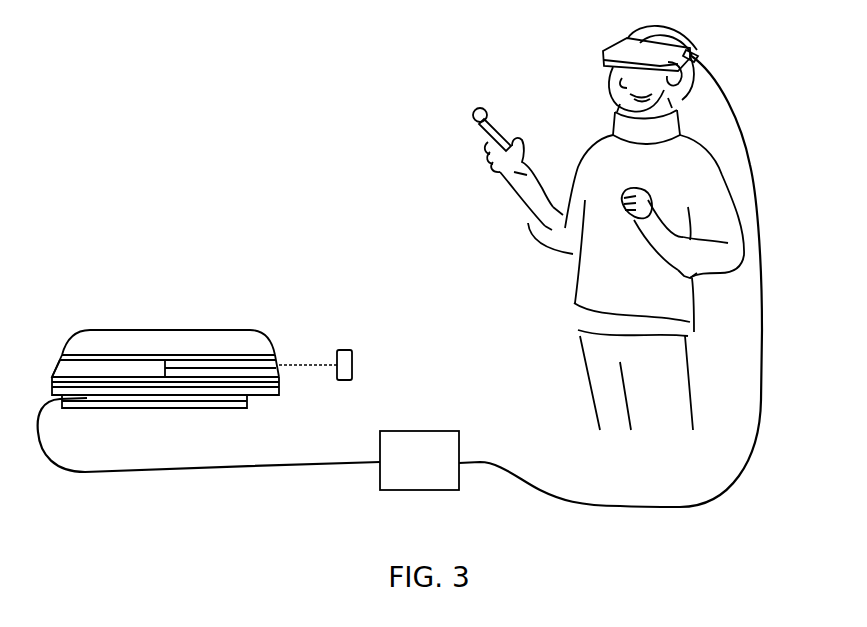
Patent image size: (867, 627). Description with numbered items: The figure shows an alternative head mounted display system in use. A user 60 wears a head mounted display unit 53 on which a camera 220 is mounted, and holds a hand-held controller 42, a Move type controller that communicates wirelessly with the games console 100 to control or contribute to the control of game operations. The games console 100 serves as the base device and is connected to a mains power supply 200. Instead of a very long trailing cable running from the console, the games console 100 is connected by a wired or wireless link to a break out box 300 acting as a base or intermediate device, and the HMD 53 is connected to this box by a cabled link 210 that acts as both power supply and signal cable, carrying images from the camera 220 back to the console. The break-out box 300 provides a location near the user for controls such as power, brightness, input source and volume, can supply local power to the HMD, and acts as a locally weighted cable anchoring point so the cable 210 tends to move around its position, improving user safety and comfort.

The games console 100 is at (175, 324).
The mains power supply 200 is at (346, 349).
The break out box 300 is at (418, 431).
The cable 210 is at (586, 496).
The user 60 is at (578, 147).
The hand-held controller 42 is at (497, 123).
The camera 220 is at (604, 58).
The head mounted display unit 53 is at (697, 55).